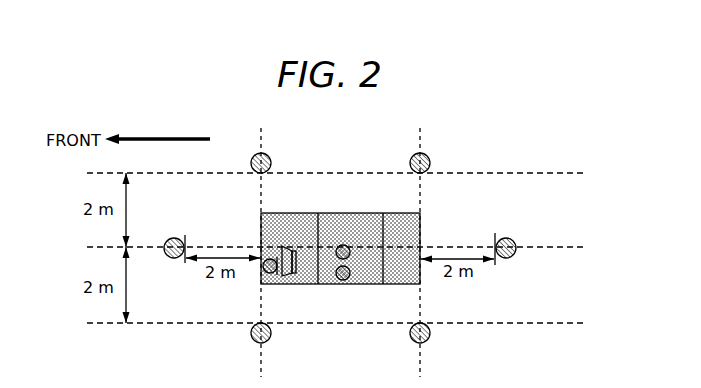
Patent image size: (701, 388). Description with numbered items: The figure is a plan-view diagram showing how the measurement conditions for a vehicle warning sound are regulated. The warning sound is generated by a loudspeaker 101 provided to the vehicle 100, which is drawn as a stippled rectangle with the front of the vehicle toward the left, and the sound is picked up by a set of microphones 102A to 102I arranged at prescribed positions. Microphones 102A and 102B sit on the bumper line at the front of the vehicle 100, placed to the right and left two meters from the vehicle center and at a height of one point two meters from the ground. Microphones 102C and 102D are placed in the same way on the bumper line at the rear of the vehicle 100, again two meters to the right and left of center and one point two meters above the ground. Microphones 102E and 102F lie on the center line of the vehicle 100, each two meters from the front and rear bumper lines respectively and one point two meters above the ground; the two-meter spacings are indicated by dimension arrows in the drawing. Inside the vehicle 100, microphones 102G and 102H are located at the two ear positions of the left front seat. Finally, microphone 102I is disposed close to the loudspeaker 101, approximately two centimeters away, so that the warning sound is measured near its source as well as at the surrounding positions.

The vehicle 100 is at (353, 211).
The loudspeaker 101 is at (288, 279).
The microphone 102A is at (254, 155).
The microphone 102B is at (267, 341).
The microphone 102C is at (413, 156).
The microphone 102D is at (426, 341).
The microphone 102E is at (168, 240).
The microphone 102F is at (527, 218).
The microphone 102G is at (348, 259).
The microphone 102H is at (344, 280).
The microphone 102I is at (265, 260).